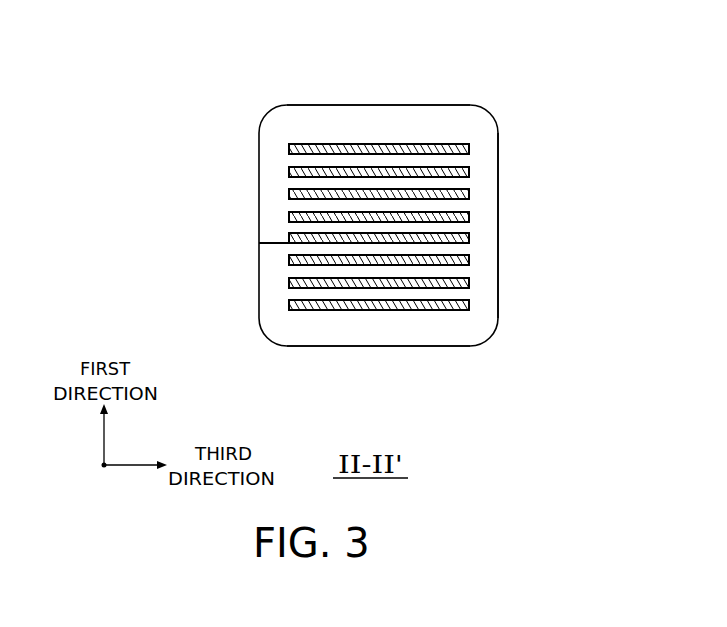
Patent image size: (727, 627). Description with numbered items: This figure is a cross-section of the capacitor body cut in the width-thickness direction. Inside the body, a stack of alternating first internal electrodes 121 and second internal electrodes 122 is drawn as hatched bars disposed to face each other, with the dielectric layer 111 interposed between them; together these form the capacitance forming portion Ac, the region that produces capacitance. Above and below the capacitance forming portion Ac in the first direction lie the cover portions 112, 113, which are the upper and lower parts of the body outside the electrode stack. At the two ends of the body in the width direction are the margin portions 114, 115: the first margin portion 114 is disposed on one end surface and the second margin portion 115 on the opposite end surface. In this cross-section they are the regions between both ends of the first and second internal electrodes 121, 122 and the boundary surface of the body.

The dielectric layer 111 is at (465, 158).
The cover portion 112 is at (377, 105).
The cover portion 113 is at (374, 346).
The first margin portion 114 is at (262, 249).
The second margin portion 115 is at (499, 256).
The first internal electrode 121 is at (470, 144).
The second internal electrode 122 is at (467, 169).
The capacitance forming portion Ac is at (288, 222).